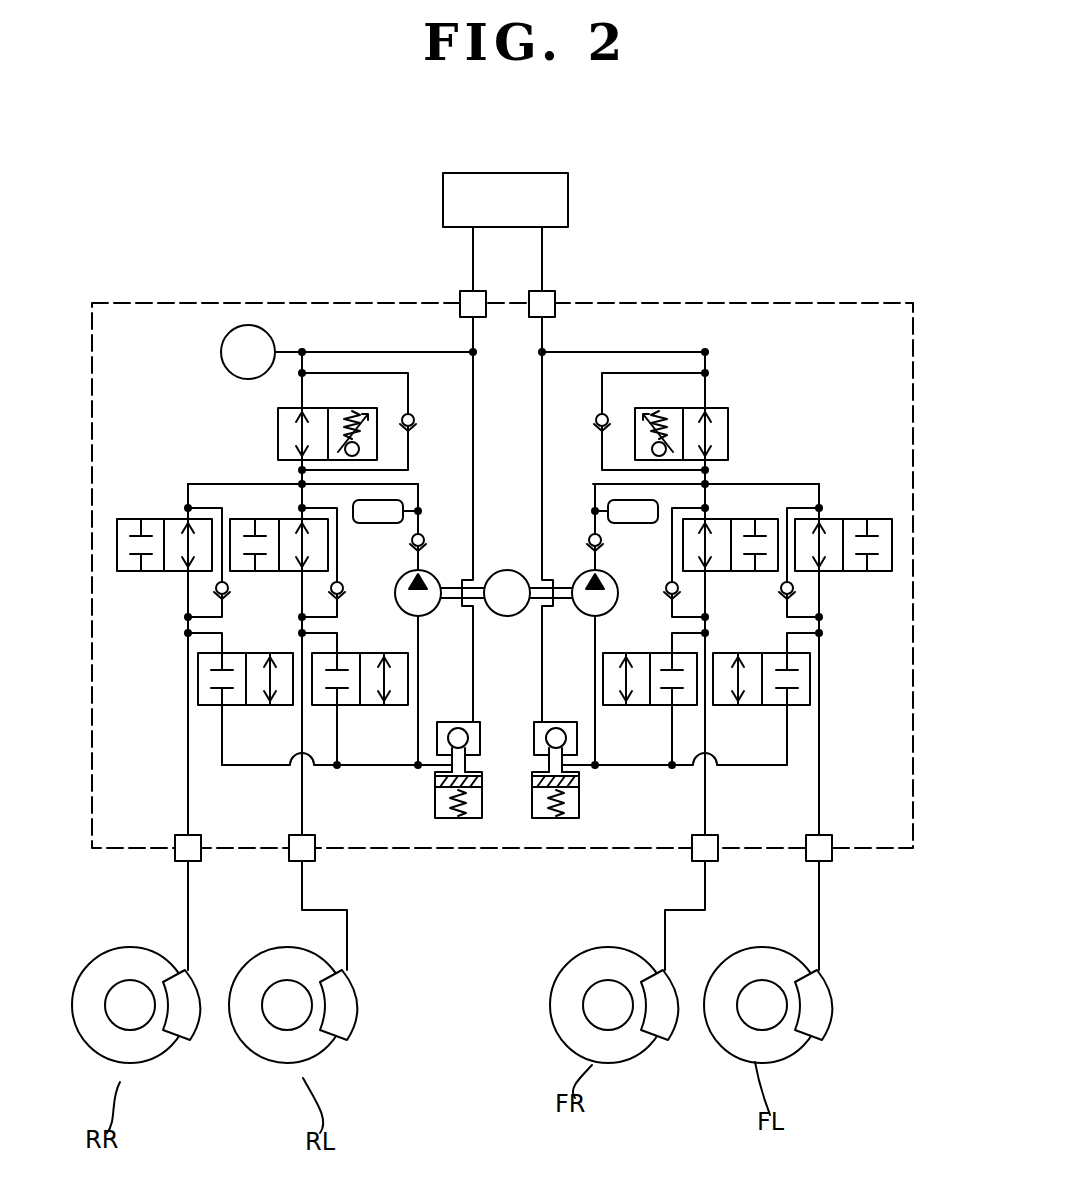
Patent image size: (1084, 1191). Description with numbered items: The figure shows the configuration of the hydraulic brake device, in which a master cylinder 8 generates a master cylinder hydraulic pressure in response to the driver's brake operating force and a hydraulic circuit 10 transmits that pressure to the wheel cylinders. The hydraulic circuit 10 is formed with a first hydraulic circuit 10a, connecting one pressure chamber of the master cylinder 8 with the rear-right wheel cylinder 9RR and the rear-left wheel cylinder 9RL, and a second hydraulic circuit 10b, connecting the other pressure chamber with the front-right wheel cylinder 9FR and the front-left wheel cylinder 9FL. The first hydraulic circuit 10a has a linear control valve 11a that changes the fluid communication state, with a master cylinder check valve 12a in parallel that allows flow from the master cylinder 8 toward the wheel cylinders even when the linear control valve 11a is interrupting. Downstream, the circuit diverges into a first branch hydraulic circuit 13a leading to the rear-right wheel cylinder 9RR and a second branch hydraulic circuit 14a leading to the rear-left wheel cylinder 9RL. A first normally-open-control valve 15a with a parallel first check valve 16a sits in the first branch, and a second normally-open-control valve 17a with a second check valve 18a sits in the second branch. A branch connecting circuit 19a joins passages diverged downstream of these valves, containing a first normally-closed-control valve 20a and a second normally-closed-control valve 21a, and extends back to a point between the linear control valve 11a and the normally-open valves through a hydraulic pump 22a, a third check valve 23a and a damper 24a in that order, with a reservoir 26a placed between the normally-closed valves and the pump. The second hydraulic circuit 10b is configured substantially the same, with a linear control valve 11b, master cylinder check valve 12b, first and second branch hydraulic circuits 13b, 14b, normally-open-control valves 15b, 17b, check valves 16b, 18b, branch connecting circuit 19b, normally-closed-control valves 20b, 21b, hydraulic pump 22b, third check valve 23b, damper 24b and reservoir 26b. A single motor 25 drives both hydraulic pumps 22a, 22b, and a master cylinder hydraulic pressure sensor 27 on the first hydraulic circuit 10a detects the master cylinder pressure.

The master cylinder 8 is at (443, 204).
The hydraulic circuit 10 is at (128, 298).
The first hydraulic circuit 10a is at (473, 272).
The second hydraulic circuit 10b is at (542, 272).
The linear control valve 11a is at (278, 428).
The linear control valve 11b is at (728, 428).
The master cylinder check valve 12a is at (414, 416).
The master cylinder check valve 12b is at (598, 416).
The first branch hydraulic circuit 13a is at (205, 483).
The first branch hydraulic circuit 13b is at (708, 499).
The second branch hydraulic circuit 14a is at (302, 499).
The second branch hydraulic circuit 14b is at (805, 483).
The first normally-open-control valve 15a is at (158, 572).
The first normally-open-control valve 15b is at (683, 547).
The first check valve 16a is at (228, 594).
The first check valve 16b is at (668, 594).
The second normally-open-control valve 17a is at (328, 545).
The second normally-open-control valve 17b is at (852, 572).
The second check valve 18a is at (343, 594).
The second check valve 18b is at (781, 594).
The branch connecting circuit 19a is at (258, 768).
The branch connecting circuit 19b is at (752, 768).
The first normally-closed-control valve 20a is at (228, 712).
The first normally-closed-control valve 20b is at (670, 712).
The second normally-closed-control valve 21a is at (342, 712).
The second normally-closed-control valve 21b is at (784, 712).
The hydraulic pump 22a is at (428, 615).
The hydraulic pump 22b is at (585, 615).
The third check valve 23a is at (422, 536).
The third check valve 23b is at (593, 536).
The damper 24a is at (385, 505).
The damper 24b is at (625, 505).
The motor 25 is at (511, 570).
The reservoir 26a is at (435, 800).
The reservoir 26b is at (579, 800).
The master cylinder hydraulic pressure sensor 27 is at (221, 352).
The rear-right wheel cylinder 9RR is at (210, 1062).
The rear-left wheel cylinder 9RL is at (356, 1030).
The front-right wheel cylinder 9FR is at (668, 1045).
The front-left wheel cylinder 9FL is at (818, 1040).